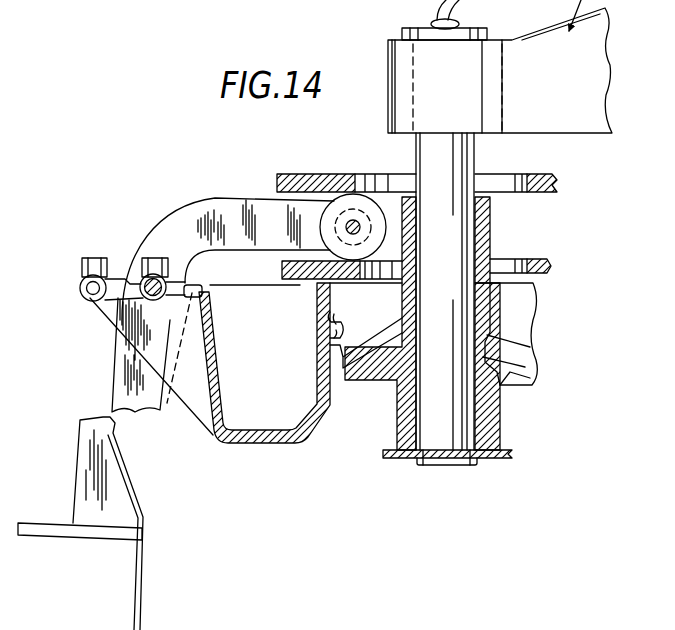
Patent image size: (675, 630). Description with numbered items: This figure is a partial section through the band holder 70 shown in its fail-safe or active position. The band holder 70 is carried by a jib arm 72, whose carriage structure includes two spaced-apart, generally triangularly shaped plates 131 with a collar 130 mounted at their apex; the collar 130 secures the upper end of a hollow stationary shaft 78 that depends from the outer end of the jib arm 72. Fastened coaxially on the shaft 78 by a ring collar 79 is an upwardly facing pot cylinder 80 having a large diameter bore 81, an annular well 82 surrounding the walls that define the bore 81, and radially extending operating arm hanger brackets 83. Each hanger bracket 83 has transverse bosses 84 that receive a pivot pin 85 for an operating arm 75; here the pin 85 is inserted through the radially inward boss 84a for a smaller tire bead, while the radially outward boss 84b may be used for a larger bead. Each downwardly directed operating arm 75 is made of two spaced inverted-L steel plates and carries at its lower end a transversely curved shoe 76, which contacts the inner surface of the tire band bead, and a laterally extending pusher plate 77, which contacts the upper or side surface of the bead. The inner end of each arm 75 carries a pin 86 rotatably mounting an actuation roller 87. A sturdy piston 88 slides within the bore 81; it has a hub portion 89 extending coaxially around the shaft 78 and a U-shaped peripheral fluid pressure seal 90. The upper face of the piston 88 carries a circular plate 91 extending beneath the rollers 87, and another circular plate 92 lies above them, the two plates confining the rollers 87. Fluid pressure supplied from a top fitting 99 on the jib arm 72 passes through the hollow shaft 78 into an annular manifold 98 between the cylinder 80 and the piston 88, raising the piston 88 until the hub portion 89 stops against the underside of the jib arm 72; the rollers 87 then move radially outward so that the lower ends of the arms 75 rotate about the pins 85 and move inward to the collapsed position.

The band holder 70 is at (160, 92).
The jib arm 72 is at (556, 629).
The operating arm 75 is at (108, 368).
The shoe 76 is at (143, 590).
The pusher plate 77 is at (80, 532).
The hollow stationary shaft 78 is at (464, 443).
The ring collar 79 is at (518, 453).
The pot cylinder 80 is at (496, 407).
The bore 81 is at (336, 352).
The annular well 82 is at (272, 420).
The operating arm hanger bracket 83 is at (200, 396).
The transverse boss 84 is at (117, 285).
The radially inward boss 84a is at (157, 286).
The radially outward boss 84b is at (80, 288).
The pivot pin 85 is at (146, 302).
The pin 86 is at (348, 228).
The actuation roller 87 is at (341, 206).
The piston 88 is at (528, 313).
The hub portion 89 is at (486, 252).
The fluid pressure seal 90 is at (336, 331).
The circular plate 91 is at (285, 271).
The circular plate 92 is at (291, 175).
The annular manifold 98 is at (365, 365).
The top fitting 99 is at (458, 24).
The collar 130 is at (408, 67).
The triangularly shaped plate 131 is at (585, 120).